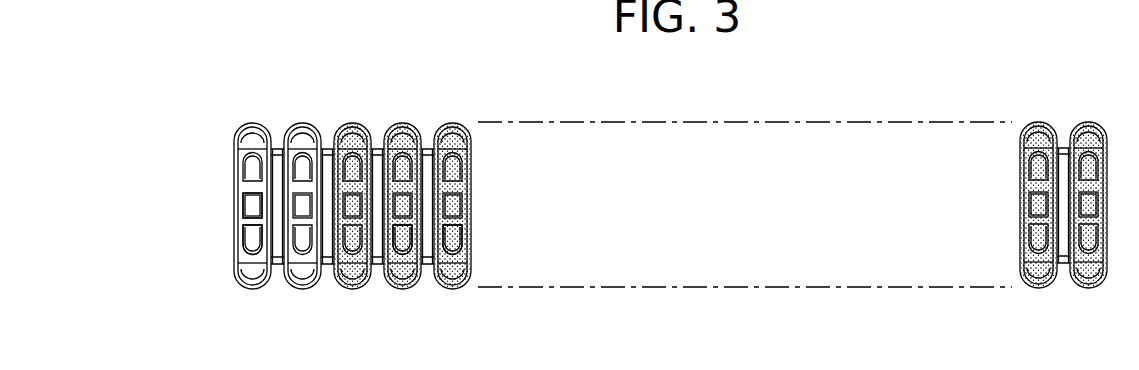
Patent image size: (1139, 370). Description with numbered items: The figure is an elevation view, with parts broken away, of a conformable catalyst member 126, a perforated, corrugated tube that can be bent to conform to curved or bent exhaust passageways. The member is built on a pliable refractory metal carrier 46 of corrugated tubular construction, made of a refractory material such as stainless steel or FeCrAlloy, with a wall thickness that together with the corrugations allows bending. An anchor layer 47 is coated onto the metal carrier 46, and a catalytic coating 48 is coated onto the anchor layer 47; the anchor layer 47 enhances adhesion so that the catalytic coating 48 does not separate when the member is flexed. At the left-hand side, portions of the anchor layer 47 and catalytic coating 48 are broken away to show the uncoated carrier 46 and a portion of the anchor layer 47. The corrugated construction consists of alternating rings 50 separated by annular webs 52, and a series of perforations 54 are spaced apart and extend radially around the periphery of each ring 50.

The conformable catalyst member 126 is at (545, 119).
The pliable refractory metal carrier 46 is at (282, 137).
The anchor layer 47 is at (378, 145).
The catalytic coating 48 is at (476, 190).
The rings 50 is at (253, 288).
The annular webs 52 is at (277, 263).
The perforations 54 is at (240, 208).